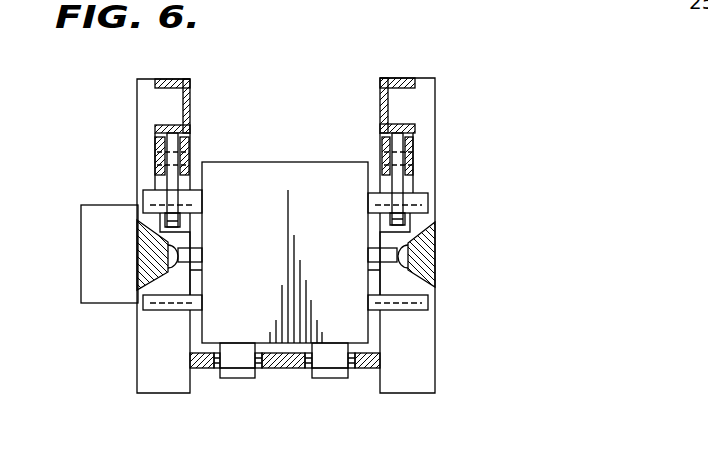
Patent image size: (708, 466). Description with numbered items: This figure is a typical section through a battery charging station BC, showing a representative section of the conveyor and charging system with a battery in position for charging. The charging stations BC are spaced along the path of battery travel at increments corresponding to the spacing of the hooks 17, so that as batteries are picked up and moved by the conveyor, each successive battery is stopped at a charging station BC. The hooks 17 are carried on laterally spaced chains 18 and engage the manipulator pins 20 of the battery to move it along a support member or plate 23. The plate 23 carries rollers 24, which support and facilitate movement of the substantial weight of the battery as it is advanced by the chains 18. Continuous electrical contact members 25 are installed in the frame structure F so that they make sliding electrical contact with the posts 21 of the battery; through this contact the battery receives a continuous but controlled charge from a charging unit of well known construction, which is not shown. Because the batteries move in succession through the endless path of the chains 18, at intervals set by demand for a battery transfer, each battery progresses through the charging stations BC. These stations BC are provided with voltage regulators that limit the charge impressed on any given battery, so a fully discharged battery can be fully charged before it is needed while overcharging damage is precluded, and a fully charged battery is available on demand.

The frame structure F is at (136, 105).
The hooks 17 is at (165, 184).
The chains 18 is at (184, 142).
The manipulator pins 20 is at (143, 206).
The posts 21 is at (181, 258).
The support member or plate 23 is at (283, 362).
The rollers 24 is at (233, 369).
The continuous electrical contact members 25 is at (140, 268).
The battery charging station BC is at (90, 286).